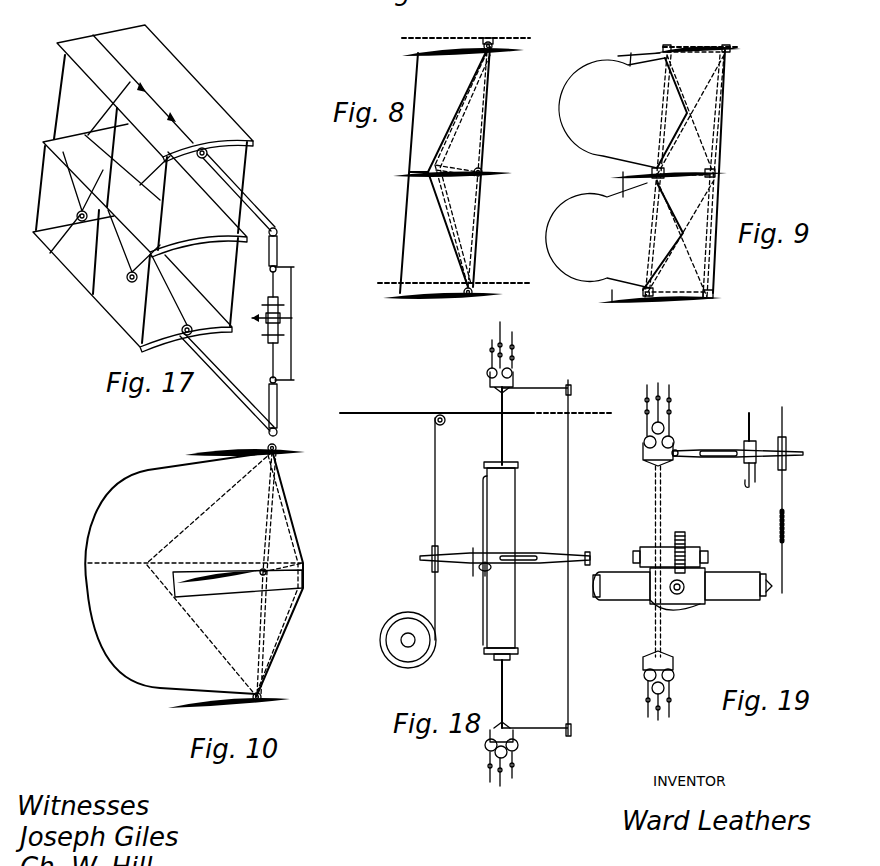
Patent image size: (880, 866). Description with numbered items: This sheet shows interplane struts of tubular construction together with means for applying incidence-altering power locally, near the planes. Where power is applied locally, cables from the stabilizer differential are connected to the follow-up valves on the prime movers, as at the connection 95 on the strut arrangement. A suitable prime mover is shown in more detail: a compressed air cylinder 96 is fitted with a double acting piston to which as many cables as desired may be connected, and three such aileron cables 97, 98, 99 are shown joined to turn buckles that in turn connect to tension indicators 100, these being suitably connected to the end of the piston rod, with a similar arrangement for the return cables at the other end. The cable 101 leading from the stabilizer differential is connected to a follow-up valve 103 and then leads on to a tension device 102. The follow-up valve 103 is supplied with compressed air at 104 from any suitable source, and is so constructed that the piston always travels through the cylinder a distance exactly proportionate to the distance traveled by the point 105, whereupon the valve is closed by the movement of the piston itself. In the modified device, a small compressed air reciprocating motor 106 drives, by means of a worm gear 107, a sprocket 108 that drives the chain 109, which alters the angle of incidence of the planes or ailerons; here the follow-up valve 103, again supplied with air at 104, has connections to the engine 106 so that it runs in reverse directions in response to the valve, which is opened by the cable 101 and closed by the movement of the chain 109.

In FIG. 17, the follow-up valve connection 95 is at (282, 316).
In FIG. 18, the compressed air cylinder 96 is at (500, 561).
In FIG. 18, the aileron cable 97 is at (501, 329).
In FIG. 18, the aileron cable 98 is at (505, 341).
In FIG. 18, the aileron cable 99 is at (514, 355).
In FIG. 18, the tension indicators 100 is at (518, 376).
In FIG. 18, the cable from stabilizer differential 101 is at (436, 456).
In FIG. 19, the cable from stabilizer differential 101 is at (787, 447).
In FIG. 18, the tension device 102 is at (402, 655).
In FIG. 19, the tension device 102 is at (787, 527).
In FIG. 18, the follow-up valve 103 is at (482, 569).
In FIG. 19, the follow-up valve 103 is at (745, 442).
In FIG. 18, the compressed air supply 104 is at (473, 548).
In FIG. 19, the compressed air supply 104 is at (750, 424).
In FIG. 18, the point 105 is at (426, 556).
In FIG. 19, the compressed air reciprocating motor 106 is at (693, 578).
In FIG. 19, the worm gear 107 is at (690, 534).
In FIG. 19, the sprocket 108 is at (653, 548).
In FIG. 19, the chain 109 is at (665, 495).